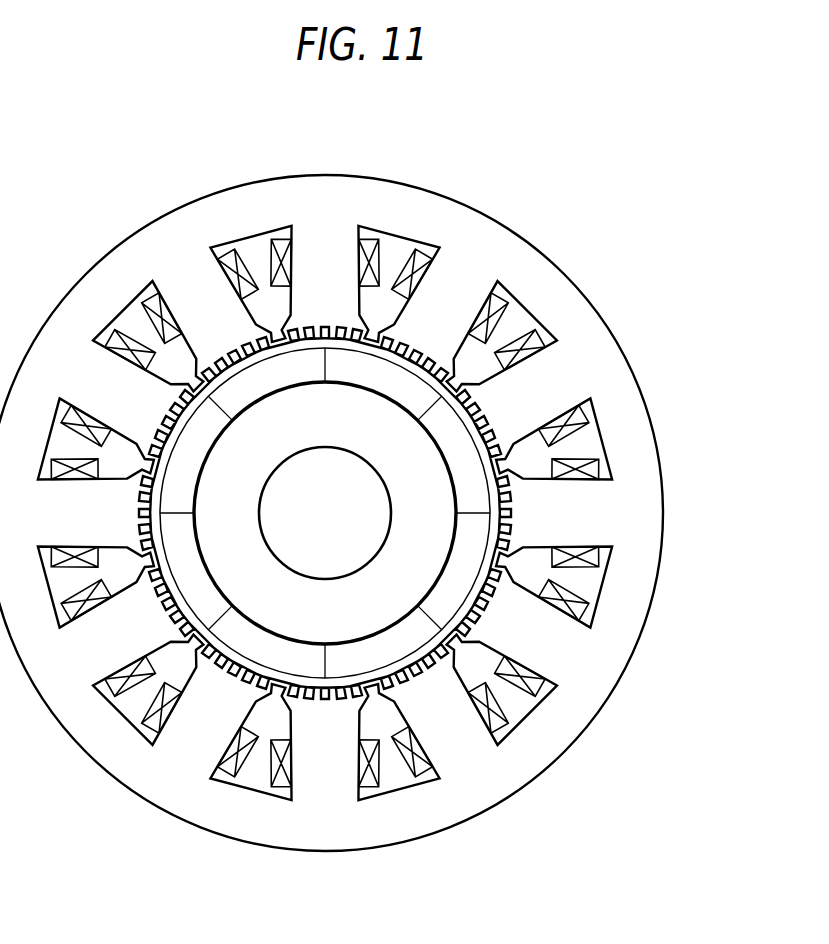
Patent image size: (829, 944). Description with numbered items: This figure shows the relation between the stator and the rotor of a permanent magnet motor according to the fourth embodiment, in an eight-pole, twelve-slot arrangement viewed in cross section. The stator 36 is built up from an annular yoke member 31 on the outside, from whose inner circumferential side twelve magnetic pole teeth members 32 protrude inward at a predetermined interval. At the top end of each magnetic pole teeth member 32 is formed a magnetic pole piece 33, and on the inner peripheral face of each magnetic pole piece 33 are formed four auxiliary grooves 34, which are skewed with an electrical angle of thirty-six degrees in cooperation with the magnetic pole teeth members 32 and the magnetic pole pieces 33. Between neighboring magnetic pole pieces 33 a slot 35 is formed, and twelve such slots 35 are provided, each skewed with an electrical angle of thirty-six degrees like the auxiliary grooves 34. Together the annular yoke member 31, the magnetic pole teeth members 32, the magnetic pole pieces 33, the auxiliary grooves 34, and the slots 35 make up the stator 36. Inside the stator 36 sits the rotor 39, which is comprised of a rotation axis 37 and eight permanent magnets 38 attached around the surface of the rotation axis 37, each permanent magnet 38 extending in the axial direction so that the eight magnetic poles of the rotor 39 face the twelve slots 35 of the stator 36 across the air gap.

The annular yoke member 31 is at (543, 267).
The magnetic pole teeth members 32 is at (567, 359).
The magnetic pole pieces 33 is at (500, 452).
The auxiliary grooves 34 is at (503, 508).
The slot 35 is at (498, 512).
The stator 36 is at (709, 240).
The rotation axis 37 is at (390, 592).
The permanent magnets 38 is at (373, 650).
The rotor 39 is at (677, 797).